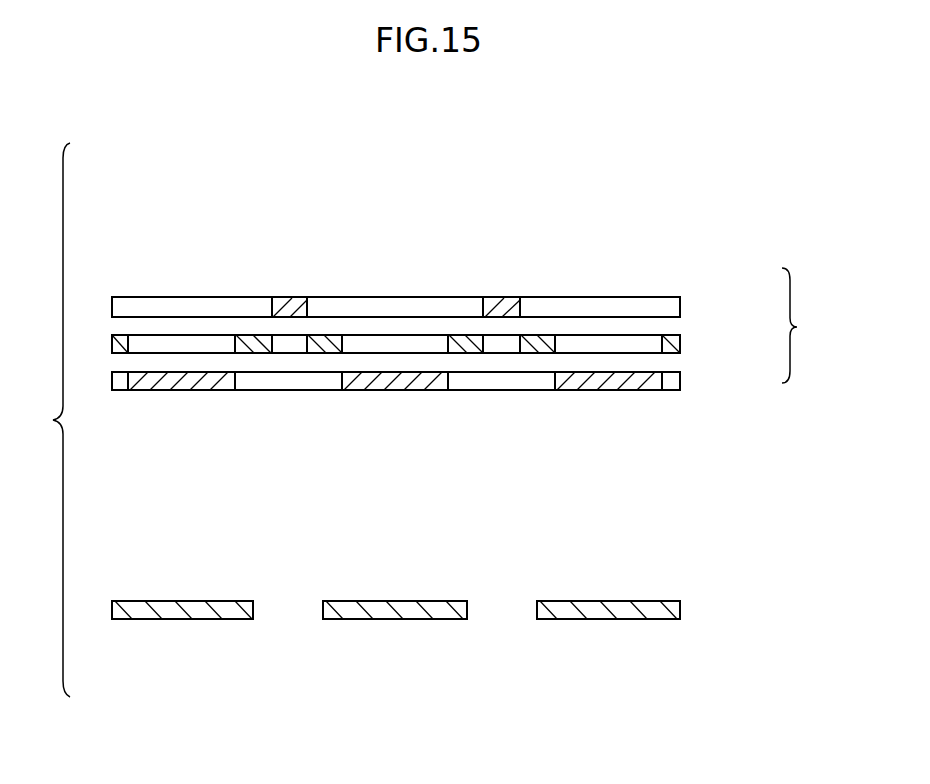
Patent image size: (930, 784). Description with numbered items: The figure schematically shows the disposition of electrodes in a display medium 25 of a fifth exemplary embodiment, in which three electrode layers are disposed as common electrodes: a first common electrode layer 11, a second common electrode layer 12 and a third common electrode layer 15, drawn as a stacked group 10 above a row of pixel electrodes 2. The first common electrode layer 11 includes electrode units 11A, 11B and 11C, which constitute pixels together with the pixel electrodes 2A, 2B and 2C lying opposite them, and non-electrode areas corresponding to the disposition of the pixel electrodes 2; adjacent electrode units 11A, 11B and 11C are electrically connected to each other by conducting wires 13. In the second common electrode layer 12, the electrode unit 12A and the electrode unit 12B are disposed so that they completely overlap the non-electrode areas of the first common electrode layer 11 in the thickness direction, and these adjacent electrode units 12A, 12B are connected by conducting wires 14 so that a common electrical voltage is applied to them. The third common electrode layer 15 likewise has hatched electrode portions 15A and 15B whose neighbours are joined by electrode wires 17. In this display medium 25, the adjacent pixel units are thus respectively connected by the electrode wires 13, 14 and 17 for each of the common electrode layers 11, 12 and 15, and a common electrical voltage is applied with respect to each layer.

The display medium 25 is at (753, 181).
The laminated structure 10 is at (807, 325).
The third common electrode layer 15 is at (682, 306).
The second common electrode layer 12 is at (682, 343).
The first common electrode layer 11 is at (682, 379).
The electrode wire 17 is at (137, 311).
The conducting wire 14 is at (184, 343).
The first light shielding portion of upper layer 15A is at (291, 309).
The second light shielding portion of upper layer 15B is at (503, 309).
The electrode unit of second common electrode layer 12A is at (320, 348).
The electrode unit of second common electrode layer 12B is at (534, 348).
The electrode unit of first common electrode layer 11A is at (181, 391).
The electrode unit of first common electrode layer 11B is at (390, 391).
The electrode unit of first common electrode layer 11C is at (604, 391).
The conducting wire 13 is at (285, 391).
The pixel electrode 2 is at (682, 612).
The pixel electrode 2A is at (181, 620).
The pixel electrode 2B is at (395, 620).
The pixel electrode 2C is at (607, 620).